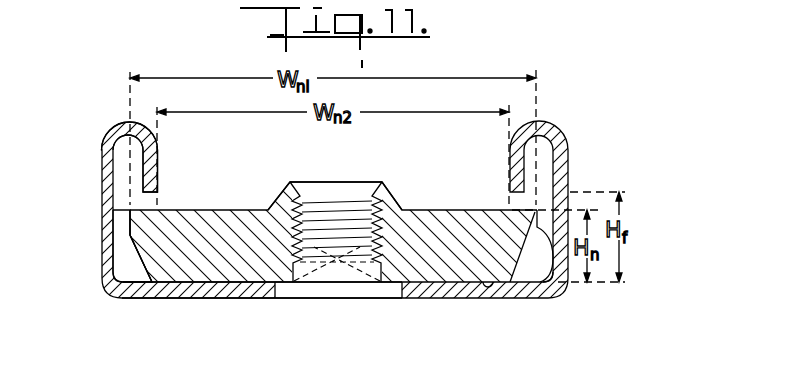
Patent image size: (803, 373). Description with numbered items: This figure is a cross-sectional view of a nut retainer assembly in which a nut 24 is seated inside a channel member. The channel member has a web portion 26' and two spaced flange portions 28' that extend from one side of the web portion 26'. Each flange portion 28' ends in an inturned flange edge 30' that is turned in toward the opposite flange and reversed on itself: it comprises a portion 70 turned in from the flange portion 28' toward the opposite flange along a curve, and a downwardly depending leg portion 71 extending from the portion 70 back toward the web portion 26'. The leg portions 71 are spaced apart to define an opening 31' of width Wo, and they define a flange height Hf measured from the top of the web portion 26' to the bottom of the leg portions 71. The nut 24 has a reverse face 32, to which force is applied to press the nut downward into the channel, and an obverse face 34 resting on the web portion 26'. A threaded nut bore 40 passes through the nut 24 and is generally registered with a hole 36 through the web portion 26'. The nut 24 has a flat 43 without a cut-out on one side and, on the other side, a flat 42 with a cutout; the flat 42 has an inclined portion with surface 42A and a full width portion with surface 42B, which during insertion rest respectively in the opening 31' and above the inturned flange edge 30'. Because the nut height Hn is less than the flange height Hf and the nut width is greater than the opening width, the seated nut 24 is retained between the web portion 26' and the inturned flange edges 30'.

The nut 24 is at (458, 236).
The web portion 26' is at (198, 310).
The flange portion 28' is at (401, 200).
The inturned flange edge 30' is at (165, 134).
The opening 31' is at (333, 163).
The reverse face 32 is at (415, 210).
The obverse face 34 is at (492, 282).
The hole 36 is at (352, 292).
The nut bore 40 is at (355, 195).
The flat 42 is at (128, 255).
The inclined portion surface 42A is at (145, 258).
The full width portion surface 42B is at (130, 218).
The flat 43 is at (545, 233).
The inturned portion 70 is at (128, 121).
The leg portion 71 is at (152, 170).